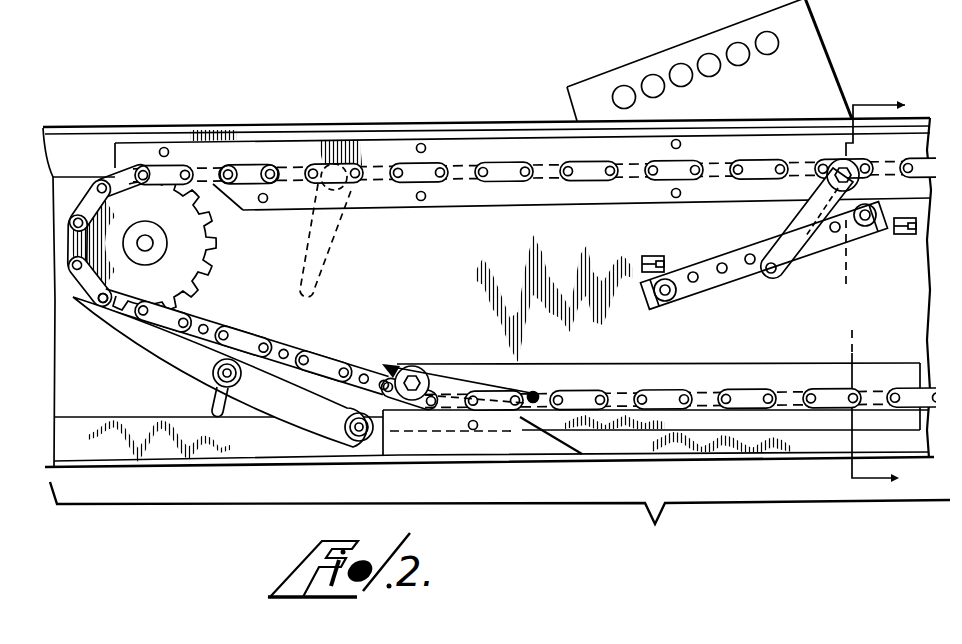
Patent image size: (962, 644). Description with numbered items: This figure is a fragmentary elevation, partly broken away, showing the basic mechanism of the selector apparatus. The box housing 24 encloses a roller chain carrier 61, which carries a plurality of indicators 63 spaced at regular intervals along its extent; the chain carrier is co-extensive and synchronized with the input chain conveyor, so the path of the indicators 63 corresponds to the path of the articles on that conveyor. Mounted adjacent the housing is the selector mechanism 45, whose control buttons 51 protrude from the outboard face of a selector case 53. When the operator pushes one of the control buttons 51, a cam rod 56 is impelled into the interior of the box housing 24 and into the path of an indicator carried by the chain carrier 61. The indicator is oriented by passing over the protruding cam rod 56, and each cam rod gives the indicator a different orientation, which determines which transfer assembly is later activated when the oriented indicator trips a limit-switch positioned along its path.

The box housing 24 is at (352, 120).
The selector mechanism 45 is at (808, 66).
The control buttons 51 is at (624, 86).
The selector case 53 is at (700, 50).
The cam rod 56 is at (697, 288).
The roller chain carrier 61 is at (505, 168).
The indicators 63 is at (342, 246).